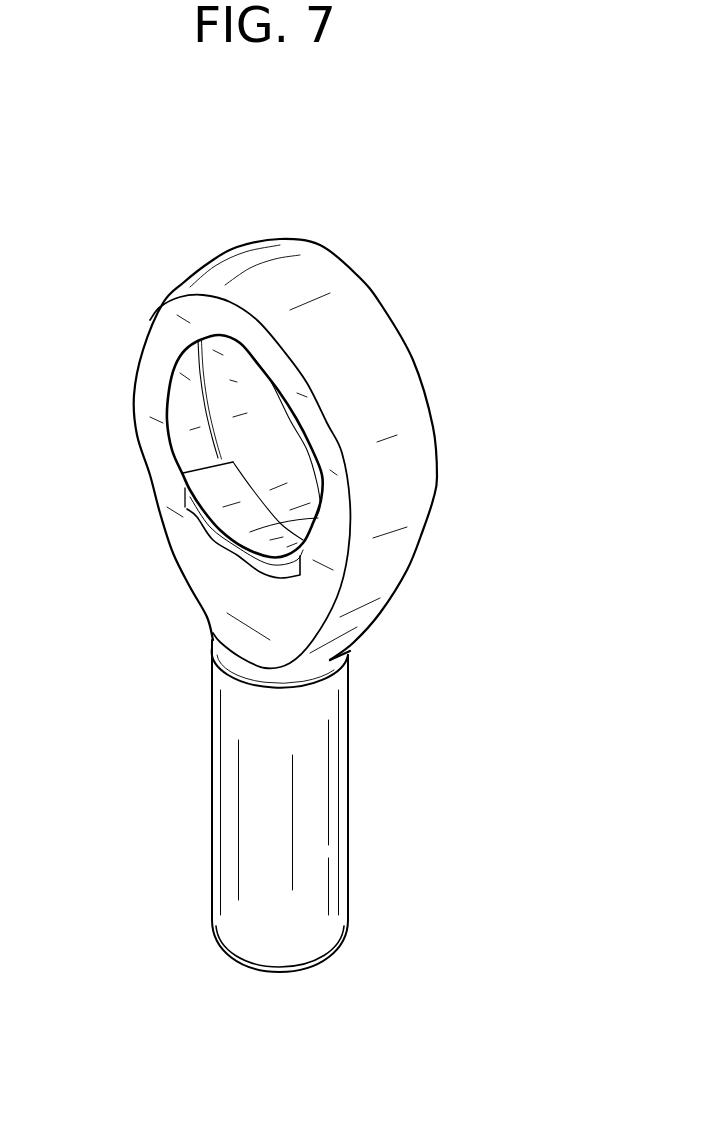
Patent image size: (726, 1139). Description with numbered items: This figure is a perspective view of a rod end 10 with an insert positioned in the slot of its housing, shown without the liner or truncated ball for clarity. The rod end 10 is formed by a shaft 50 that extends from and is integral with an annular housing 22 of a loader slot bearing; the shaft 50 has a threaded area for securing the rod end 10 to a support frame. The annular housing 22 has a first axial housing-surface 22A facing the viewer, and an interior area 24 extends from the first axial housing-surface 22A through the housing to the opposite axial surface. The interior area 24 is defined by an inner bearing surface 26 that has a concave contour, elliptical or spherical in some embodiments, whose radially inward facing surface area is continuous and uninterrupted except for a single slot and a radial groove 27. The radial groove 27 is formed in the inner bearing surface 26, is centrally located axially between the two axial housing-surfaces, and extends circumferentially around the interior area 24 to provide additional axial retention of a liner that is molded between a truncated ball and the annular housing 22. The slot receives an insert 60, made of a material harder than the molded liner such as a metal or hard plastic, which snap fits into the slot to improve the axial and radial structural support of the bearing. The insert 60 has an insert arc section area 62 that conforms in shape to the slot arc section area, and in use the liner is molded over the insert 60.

The rod end 10 is at (176, 221).
The annular housing 22 is at (348, 324).
The first axial housing-surface 22A is at (160, 365).
The interior area 24 is at (220, 365).
The inner bearing surface 26 is at (187, 428).
The radial groove 27 is at (205, 407).
The insert 60 is at (196, 519).
The insert arc section area 62 is at (250, 532).
The shaft 50 is at (317, 767).